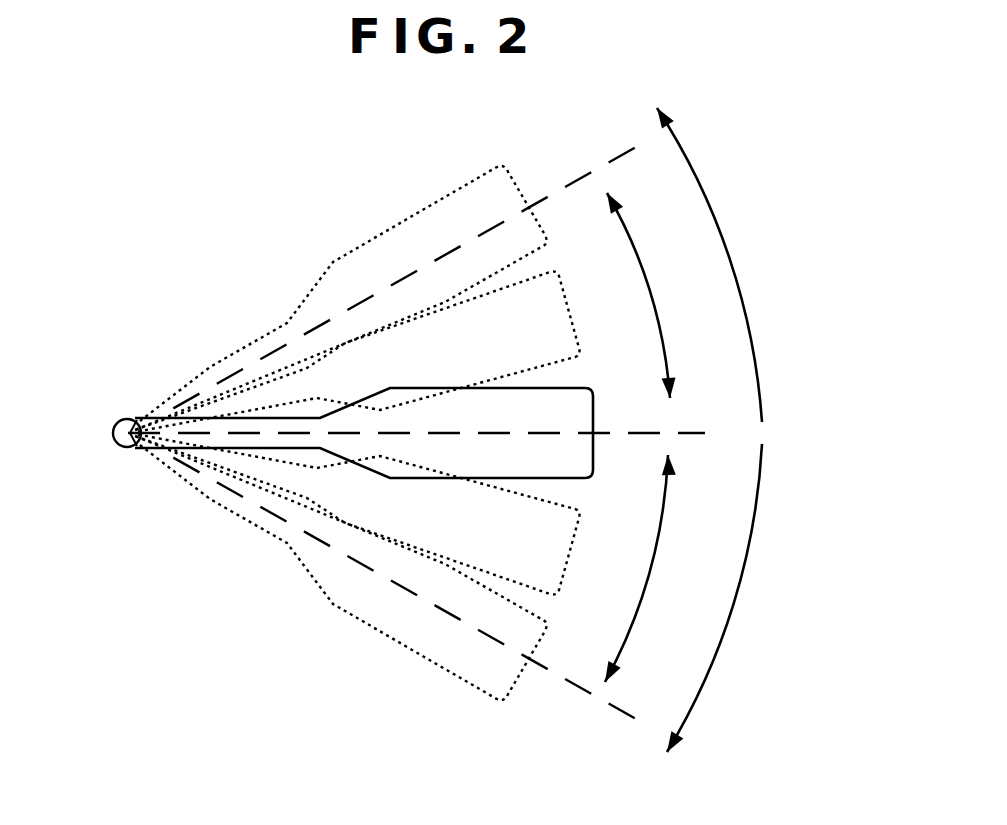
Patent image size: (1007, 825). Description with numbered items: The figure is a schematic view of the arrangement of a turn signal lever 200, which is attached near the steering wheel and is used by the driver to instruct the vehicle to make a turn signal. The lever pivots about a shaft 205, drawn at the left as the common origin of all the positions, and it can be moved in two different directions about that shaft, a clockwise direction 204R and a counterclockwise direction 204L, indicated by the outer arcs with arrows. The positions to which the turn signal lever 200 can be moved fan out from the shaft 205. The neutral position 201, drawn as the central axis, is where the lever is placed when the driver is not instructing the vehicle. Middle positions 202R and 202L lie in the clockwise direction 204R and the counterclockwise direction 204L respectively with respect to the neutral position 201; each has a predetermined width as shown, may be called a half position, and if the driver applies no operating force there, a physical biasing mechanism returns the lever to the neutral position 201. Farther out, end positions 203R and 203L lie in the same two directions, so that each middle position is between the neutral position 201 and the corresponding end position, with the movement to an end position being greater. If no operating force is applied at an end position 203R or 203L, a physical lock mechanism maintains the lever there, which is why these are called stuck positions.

The turn signal lever 200 is at (583, 407).
The neutral position 201 is at (682, 433).
The middle position 202L is at (655, 307).
The middle position 202R is at (645, 587).
The end position 203L is at (584, 172).
The end position 203R is at (613, 708).
The counterclockwise direction 204L is at (750, 320).
The clockwise direction 204R is at (800, 513).
The shaft 205 is at (121, 428).